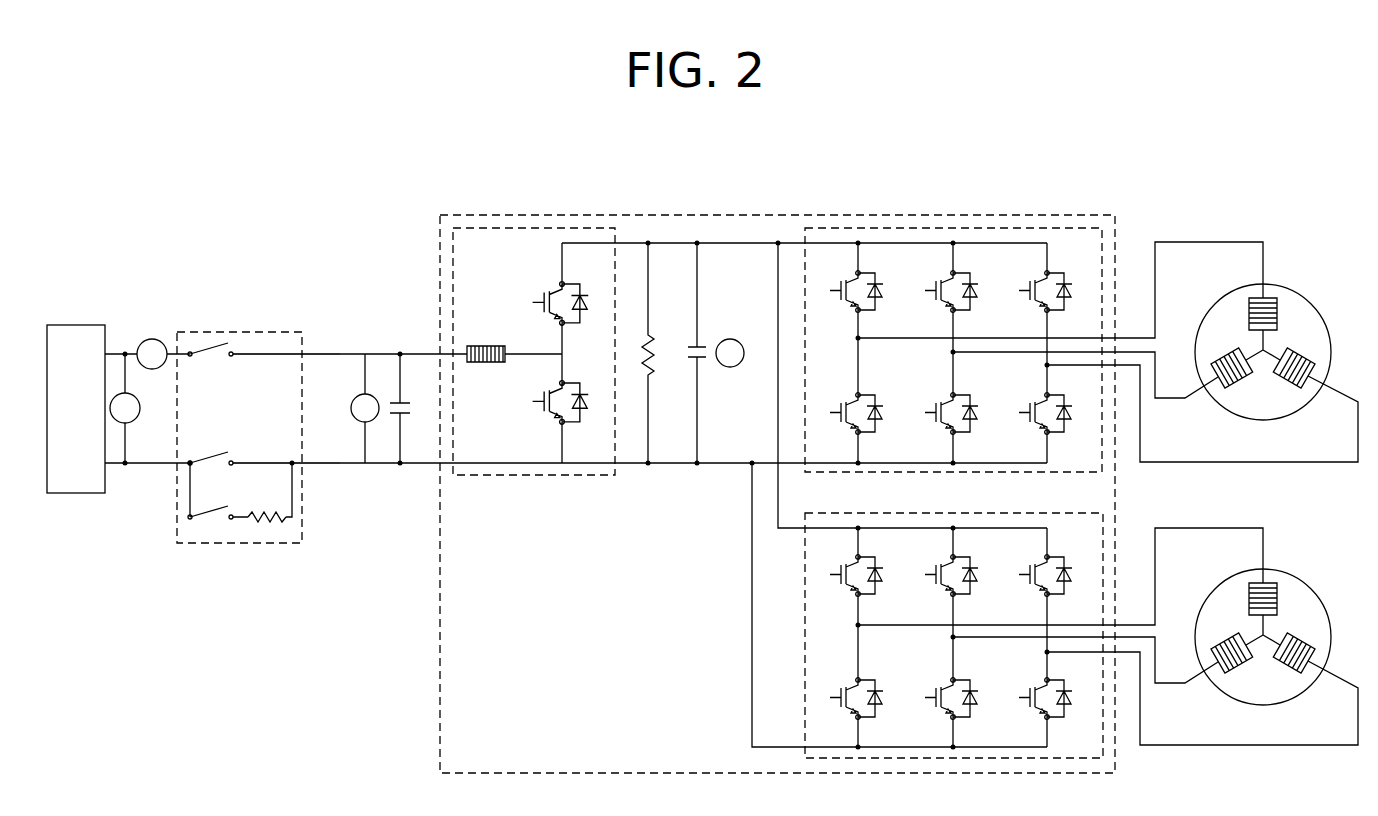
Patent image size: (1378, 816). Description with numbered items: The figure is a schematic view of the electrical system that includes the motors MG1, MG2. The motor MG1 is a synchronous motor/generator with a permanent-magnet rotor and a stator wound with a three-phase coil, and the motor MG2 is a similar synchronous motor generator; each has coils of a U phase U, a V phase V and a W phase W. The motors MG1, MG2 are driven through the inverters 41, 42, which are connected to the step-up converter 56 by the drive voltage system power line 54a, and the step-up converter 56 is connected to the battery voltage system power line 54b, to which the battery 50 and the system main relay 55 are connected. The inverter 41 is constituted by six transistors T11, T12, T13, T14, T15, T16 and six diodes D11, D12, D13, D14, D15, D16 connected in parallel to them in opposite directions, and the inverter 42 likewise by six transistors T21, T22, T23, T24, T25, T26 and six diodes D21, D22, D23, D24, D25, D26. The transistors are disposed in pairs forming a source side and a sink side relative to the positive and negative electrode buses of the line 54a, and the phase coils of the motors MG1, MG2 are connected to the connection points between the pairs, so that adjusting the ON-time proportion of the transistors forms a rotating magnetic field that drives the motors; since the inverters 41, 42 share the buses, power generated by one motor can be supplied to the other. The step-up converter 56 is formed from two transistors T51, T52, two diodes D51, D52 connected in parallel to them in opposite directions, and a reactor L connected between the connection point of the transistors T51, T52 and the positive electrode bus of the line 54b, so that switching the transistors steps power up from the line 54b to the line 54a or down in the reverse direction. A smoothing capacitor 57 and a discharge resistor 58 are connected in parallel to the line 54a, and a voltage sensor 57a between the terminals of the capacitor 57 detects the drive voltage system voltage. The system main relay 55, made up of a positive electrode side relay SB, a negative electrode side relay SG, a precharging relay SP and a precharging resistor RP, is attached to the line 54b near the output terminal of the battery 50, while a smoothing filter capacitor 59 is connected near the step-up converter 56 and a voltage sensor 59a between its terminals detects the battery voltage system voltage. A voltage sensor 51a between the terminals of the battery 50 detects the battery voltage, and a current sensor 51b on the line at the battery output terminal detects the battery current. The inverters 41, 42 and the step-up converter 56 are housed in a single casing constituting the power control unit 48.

The battery 50 is at (75, 325).
The voltage sensor 51a is at (135, 420).
The current sensor 51b is at (152, 339).
The system main relay 55 is at (252, 330).
The positive electrode side relay SB is at (218, 346).
The negative electrode side relay SG is at (215, 455).
The precharging relay SP is at (218, 510).
The precharging resistor RP is at (268, 521).
The battery voltage system power line 54b is at (340, 463).
The smoothing filter capacitor 59 is at (400, 392).
The voltage sensor 59a is at (365, 393).
The power control unit 48 is at (440, 548).
The step-up converter 56 is at (750, 379).
The reactor L is at (482, 343).
The transistor T51 is at (534, 301).
The transistor T52 is at (534, 401).
The diode D51 is at (582, 313).
The diode D52 is at (582, 412).
The smoothing capacitor 57 is at (690, 340).
The voltage sensor 57a is at (730, 338).
The discharge resistor 58 is at (655, 375).
The drive voltage system power line 54a is at (762, 245).
The inverter 41 is at (953, 370).
The inverter 42 is at (954, 621).
The transistor T11 is at (830, 290).
The transistor T12 is at (925, 290).
The transistor T13 is at (1019, 290).
The transistor T14 is at (830, 412).
The transistor T15 is at (925, 412).
The transistor T16 is at (1019, 412).
The diode D11 is at (878, 297).
The diode D12 is at (973, 297).
The diode D13 is at (1067, 297).
The diode D14 is at (878, 419).
The diode D15 is at (973, 419).
The diode D16 is at (1067, 419).
The transistor T21 is at (830, 574).
The transistor T22 is at (925, 574).
The transistor T23 is at (1019, 574).
The transistor T24 is at (830, 697).
The transistor T25 is at (925, 697).
The transistor T26 is at (1019, 697).
The diode D21 is at (878, 581).
The diode D22 is at (973, 581).
The diode D23 is at (1067, 581).
The diode D24 is at (878, 704).
The diode D25 is at (973, 704).
The diode D26 is at (1067, 704).
The motor MG1 is at (1292, 288).
The motor MG2 is at (1292, 572).
The U phase coil U is at (1257, 436).
The V phase coil V is at (1212, 513).
The W phase coil W is at (1315, 513).